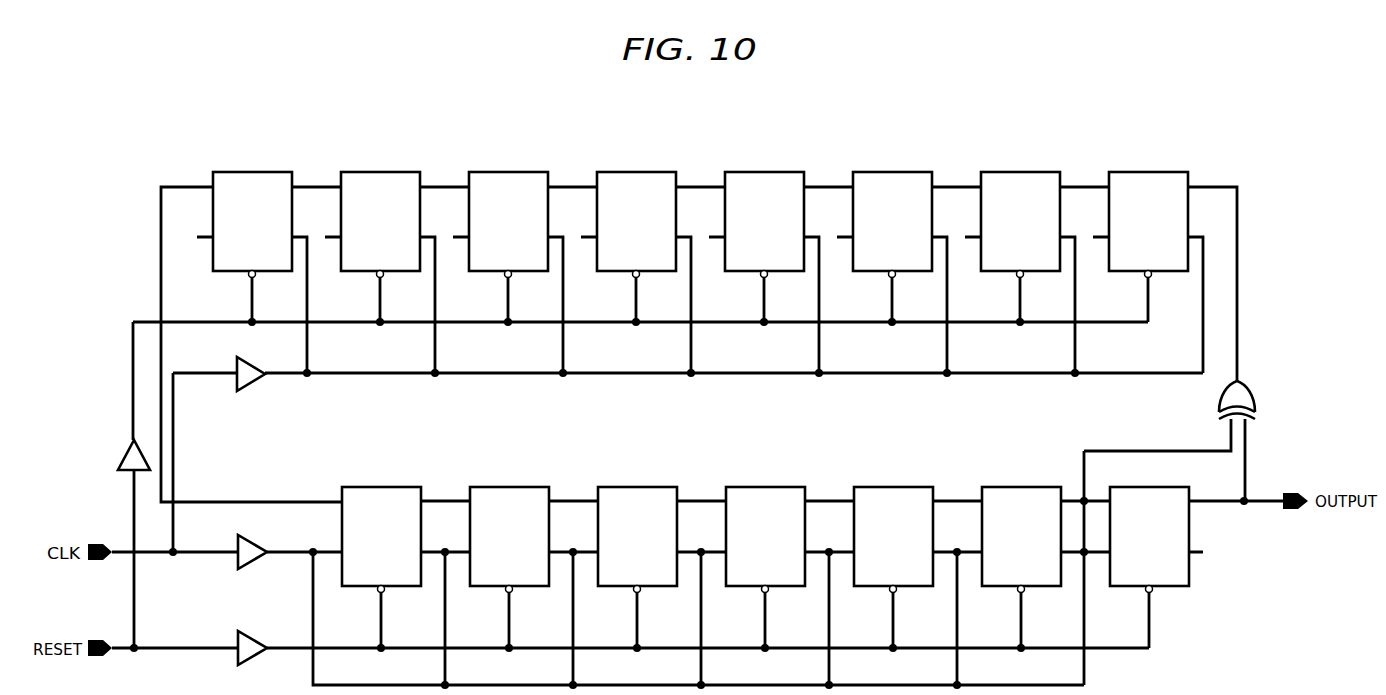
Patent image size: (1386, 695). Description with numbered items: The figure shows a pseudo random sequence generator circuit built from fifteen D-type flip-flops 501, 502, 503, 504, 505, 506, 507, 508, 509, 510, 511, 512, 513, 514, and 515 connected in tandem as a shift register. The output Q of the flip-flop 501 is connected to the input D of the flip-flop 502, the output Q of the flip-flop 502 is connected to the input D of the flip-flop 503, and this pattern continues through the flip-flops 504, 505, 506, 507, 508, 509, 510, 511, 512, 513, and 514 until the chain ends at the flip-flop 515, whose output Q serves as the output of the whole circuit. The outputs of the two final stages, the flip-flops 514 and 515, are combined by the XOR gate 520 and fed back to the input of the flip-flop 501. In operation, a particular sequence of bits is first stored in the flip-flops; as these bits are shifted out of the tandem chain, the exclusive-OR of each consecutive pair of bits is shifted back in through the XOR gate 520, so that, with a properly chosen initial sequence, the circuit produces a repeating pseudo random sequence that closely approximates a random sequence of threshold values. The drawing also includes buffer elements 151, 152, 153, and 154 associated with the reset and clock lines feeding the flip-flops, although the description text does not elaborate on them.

The D-type flip-flop 501 is at (1148, 172).
The D-type flip-flop 502 is at (1018, 172).
The D-type flip-flop 503 is at (890, 172).
The D-type flip-flop 504 is at (762, 172).
The D-type flip-flop 505 is at (634, 172).
The D-type flip-flop 506 is at (506, 172).
The D-type flip-flop 507 is at (378, 172).
The D-type flip-flop 508 is at (250, 172).
The D-type flip-flop 509 is at (378, 487).
The D-type flip-flop 510 is at (506, 487).
The D-type flip-flop 511 is at (634, 487).
The D-type flip-flop 512 is at (764, 487).
The D-type flip-flop 513 is at (892, 487).
The D-type flip-flop 514 is at (1020, 487).
The D-type flip-flop 515 is at (1140, 487).
The reset buffer BTL1A 151 is at (250, 648).
The buffer BTL1A 152 is at (112, 465).
The buffer BTL1A 153 is at (249, 375).
The clock buffer BTL1A 154 is at (249, 554).
The XOR gate 520 is at (1256, 400).